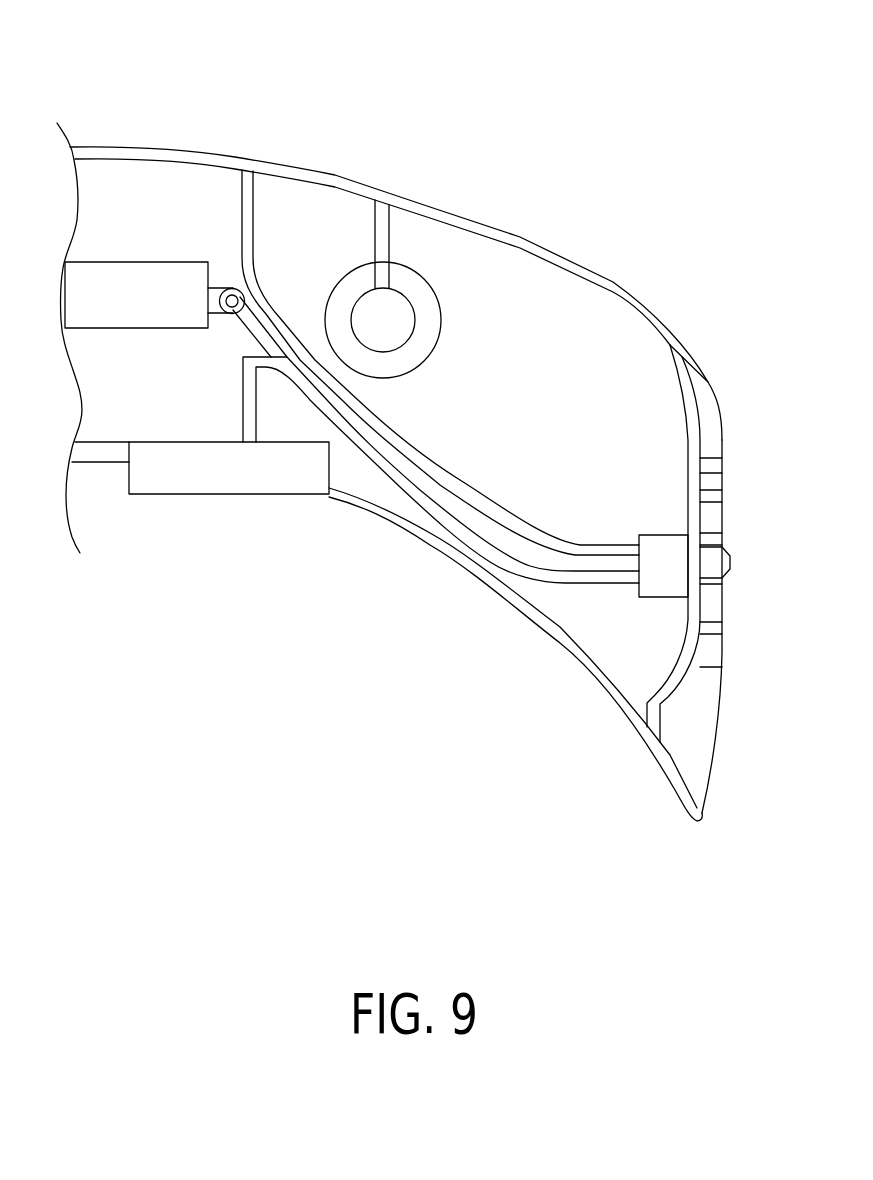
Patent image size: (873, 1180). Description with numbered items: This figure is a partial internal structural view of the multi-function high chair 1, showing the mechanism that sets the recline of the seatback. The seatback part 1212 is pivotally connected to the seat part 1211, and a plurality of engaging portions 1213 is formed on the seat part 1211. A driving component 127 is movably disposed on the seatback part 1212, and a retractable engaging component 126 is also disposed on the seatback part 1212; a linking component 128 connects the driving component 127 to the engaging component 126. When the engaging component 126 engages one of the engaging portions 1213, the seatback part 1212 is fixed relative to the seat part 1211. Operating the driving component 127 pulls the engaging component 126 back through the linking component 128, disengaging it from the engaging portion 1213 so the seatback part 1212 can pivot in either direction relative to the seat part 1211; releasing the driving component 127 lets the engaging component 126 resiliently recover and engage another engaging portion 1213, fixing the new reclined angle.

The multi-function high chair 1 is at (452, 418).
The engaging component 126 is at (717, 558).
The driving component 127 is at (160, 290).
The linking component 128 is at (523, 555).
The seat part 1211 is at (683, 348).
The seatback part 1212 is at (433, 543).
The engaging portion 1213 is at (757, 433).